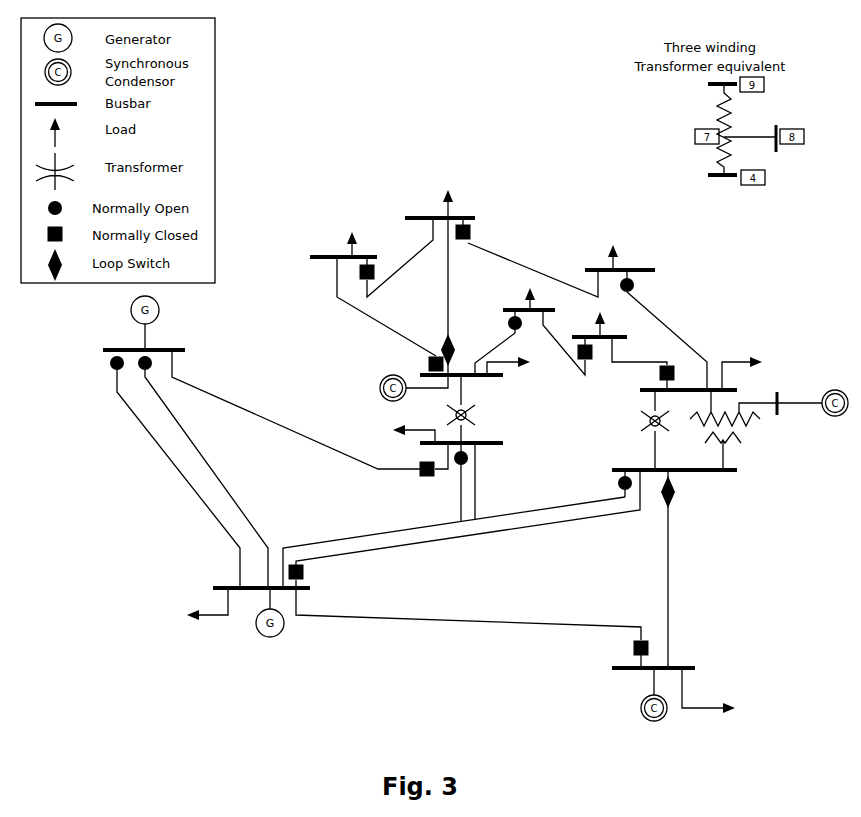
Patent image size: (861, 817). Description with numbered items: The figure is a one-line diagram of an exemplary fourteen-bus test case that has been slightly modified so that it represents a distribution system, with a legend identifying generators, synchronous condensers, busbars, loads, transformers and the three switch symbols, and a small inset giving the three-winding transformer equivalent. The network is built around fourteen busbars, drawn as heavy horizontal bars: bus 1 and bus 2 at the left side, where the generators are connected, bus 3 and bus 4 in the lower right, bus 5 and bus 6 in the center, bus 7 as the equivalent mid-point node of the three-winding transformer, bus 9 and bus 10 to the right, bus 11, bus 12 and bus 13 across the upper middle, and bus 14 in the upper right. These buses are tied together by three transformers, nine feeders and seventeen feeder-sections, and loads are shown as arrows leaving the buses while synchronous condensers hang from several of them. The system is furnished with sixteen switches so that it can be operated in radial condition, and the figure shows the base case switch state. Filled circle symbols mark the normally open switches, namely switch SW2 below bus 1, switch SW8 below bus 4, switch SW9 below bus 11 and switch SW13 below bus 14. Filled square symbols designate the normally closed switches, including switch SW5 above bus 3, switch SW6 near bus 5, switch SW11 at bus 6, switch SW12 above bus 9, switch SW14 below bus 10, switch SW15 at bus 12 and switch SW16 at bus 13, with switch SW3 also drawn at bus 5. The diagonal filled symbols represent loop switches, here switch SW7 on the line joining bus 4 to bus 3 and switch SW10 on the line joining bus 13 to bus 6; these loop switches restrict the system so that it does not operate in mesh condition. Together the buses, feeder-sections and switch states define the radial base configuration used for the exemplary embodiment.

The bus 1 is at (261, 442).
The bus 2 is at (414, 555).
The bus 3 is at (673, 691).
The bus 4 is at (689, 469).
The bus 5 is at (480, 448).
The bus 6 is at (456, 309).
The bus 7 is at (737, 451).
The bus 9 is at (744, 413).
The bus 10 is at (619, 338).
The bus 11 is at (529, 331).
The bus 12 is at (322, 255).
The bus 13 is at (434, 243).
The bus 14 is at (574, 270).
The normally open switch SW2 is at (203, 472).
The switch SW3 is at (414, 443).
The normally closed switch SW5 is at (624, 655).
The normally closed switch SW6 is at (444, 469).
The loop switch SW7 is at (685, 569).
The normally open switch SW8 is at (610, 483).
The normally open switch SW9 is at (510, 342).
The loop switch SW10 is at (430, 340).
The normally closed switch SW11 is at (390, 314).
The normally closed switch SW12 is at (687, 378).
The normally open switch SW13 is at (663, 330).
The normally closed switch SW14 is at (605, 355).
The normally closed switch SW15 is at (387, 268).
The normally closed switch SW16 is at (484, 233).